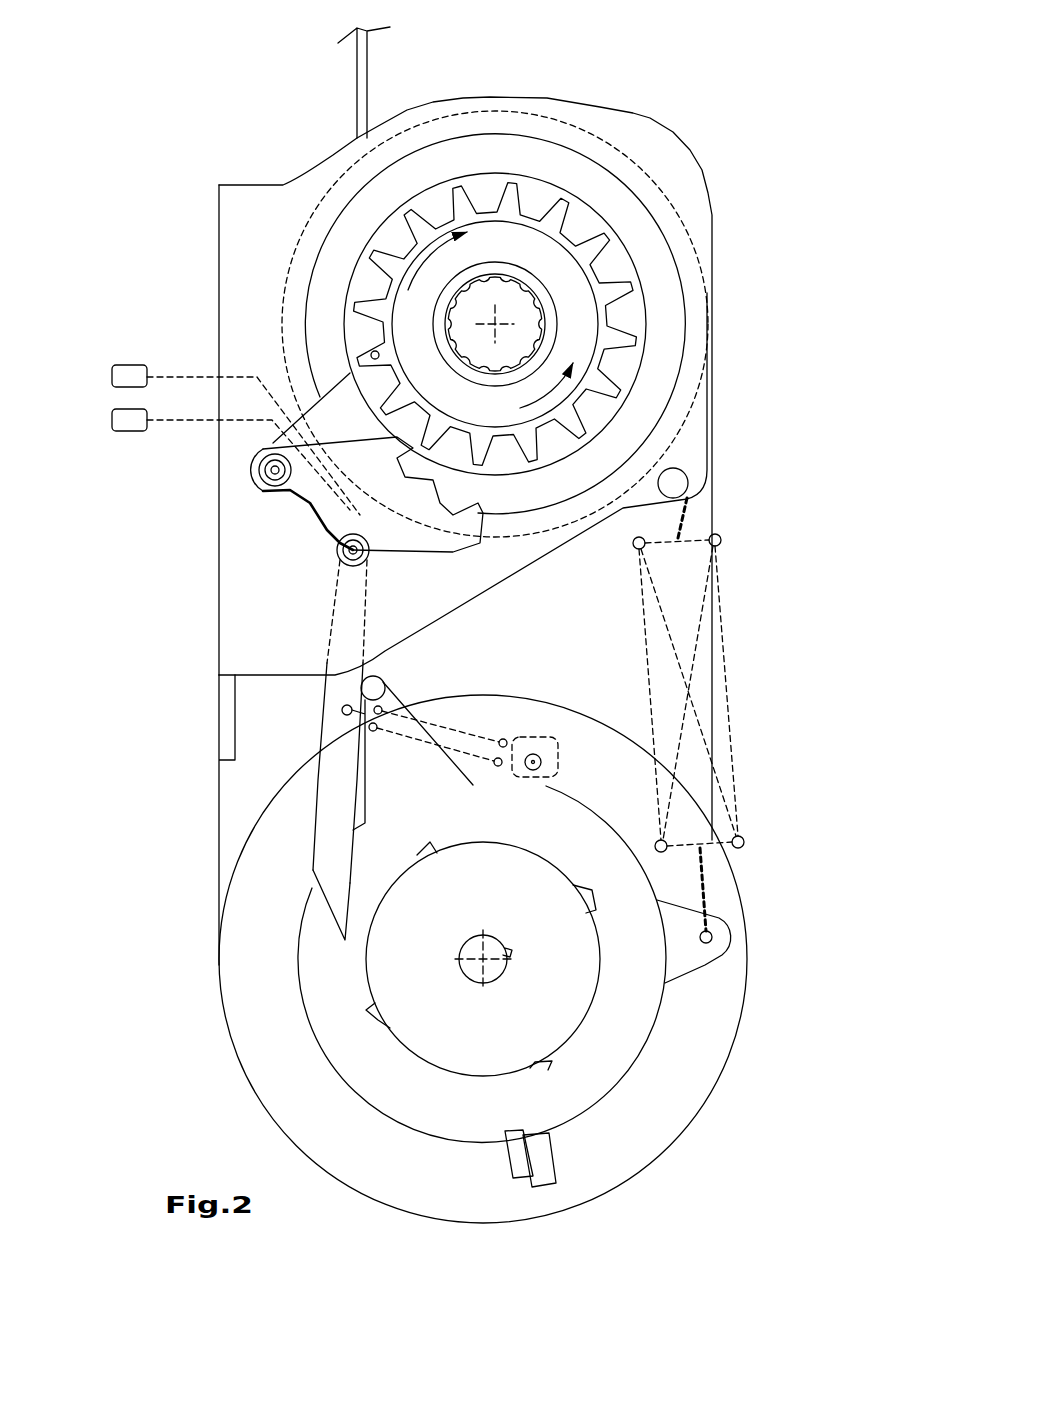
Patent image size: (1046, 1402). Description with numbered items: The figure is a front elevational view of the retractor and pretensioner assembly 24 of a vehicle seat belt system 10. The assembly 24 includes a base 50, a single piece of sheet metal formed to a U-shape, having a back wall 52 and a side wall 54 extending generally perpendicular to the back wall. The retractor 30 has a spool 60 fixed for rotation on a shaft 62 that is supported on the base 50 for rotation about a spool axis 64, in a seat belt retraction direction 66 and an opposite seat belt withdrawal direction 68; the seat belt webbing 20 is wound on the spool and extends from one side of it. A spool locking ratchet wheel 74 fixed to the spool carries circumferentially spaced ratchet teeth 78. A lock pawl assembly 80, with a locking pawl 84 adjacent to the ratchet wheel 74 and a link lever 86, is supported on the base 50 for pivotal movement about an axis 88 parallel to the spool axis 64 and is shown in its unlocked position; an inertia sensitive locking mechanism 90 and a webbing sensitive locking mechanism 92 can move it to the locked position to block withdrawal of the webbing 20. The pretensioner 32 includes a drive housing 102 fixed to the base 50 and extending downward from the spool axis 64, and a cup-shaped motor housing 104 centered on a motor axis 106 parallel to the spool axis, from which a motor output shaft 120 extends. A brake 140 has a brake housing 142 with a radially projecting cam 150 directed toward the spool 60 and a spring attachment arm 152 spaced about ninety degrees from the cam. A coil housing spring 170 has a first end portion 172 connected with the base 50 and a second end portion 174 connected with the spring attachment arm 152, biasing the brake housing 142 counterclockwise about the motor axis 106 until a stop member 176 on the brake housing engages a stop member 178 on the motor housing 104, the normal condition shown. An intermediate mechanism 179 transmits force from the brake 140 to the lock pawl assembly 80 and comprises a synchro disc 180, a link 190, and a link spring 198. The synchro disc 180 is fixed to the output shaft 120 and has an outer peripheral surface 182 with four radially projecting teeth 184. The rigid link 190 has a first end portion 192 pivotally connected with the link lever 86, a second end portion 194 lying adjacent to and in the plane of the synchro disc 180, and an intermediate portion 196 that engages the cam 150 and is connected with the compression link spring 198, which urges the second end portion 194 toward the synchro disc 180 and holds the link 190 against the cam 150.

The seat belt system 10 is at (185, 915).
The seat belt webbing 20 is at (355, 70).
The retractor and pretensioner assembly 24 is at (165, 192).
The retractor 30 is at (190, 283).
The pretensioner 32 is at (200, 1025).
The base 50 is at (220, 635).
The back wall 52 is at (220, 580).
The side wall 54 is at (687, 436).
The spool 60 is at (673, 200).
The shaft 62 is at (513, 298).
The spool axis 64 is at (495, 324).
The seat belt retraction direction 66 is at (557, 366).
The seat belt withdrawal direction 68 is at (430, 257).
The spool locking ratchet wheel 74 is at (565, 195).
The ratchet teeth 78 is at (517, 187).
The lock pawl assembly 80 is at (258, 513).
The locking pawl 84 is at (400, 523).
The link lever 86 is at (300, 515).
The axis 88 is at (262, 473).
The inertia sensitive locking mechanism 90 is at (112, 374).
The webbing sensitive locking mechanism 92 is at (112, 419).
The drive housing 102 is at (220, 797).
The motor housing 104 is at (247, 1077).
The motor axis 106 is at (483, 963).
The motor output shaft 120 is at (500, 973).
The brake 140 is at (378, 1133).
The brake housing 142 is at (348, 1083).
The cam 150 is at (385, 680).
The spring attachment arm 152 is at (722, 962).
The housing spring 170 is at (733, 682).
The first end portion 172 is at (688, 517).
The second end portion 174 is at (703, 883).
The stop member 176 is at (507, 1160).
The stop member 178 is at (553, 1163).
The intermediate mechanism 179 is at (282, 840).
The synchro disc 180 is at (572, 1035).
The outer peripheral surface 182 is at (593, 1003).
The teeth 184 is at (367, 1017).
The link 190 is at (323, 739).
The first end portion 192 is at (330, 587).
The second end portion 194 is at (333, 895).
The intermediate portion 196 is at (340, 687).
The link spring 198 is at (467, 730).